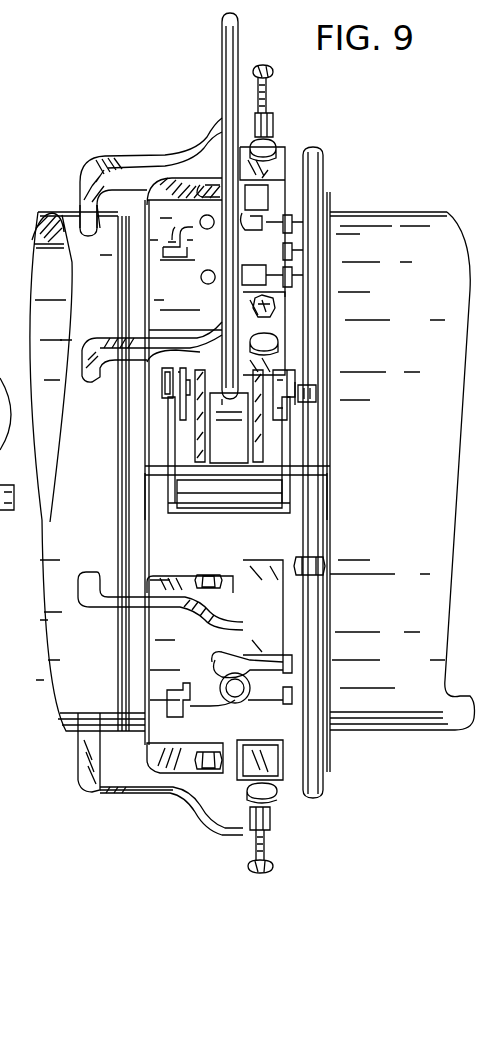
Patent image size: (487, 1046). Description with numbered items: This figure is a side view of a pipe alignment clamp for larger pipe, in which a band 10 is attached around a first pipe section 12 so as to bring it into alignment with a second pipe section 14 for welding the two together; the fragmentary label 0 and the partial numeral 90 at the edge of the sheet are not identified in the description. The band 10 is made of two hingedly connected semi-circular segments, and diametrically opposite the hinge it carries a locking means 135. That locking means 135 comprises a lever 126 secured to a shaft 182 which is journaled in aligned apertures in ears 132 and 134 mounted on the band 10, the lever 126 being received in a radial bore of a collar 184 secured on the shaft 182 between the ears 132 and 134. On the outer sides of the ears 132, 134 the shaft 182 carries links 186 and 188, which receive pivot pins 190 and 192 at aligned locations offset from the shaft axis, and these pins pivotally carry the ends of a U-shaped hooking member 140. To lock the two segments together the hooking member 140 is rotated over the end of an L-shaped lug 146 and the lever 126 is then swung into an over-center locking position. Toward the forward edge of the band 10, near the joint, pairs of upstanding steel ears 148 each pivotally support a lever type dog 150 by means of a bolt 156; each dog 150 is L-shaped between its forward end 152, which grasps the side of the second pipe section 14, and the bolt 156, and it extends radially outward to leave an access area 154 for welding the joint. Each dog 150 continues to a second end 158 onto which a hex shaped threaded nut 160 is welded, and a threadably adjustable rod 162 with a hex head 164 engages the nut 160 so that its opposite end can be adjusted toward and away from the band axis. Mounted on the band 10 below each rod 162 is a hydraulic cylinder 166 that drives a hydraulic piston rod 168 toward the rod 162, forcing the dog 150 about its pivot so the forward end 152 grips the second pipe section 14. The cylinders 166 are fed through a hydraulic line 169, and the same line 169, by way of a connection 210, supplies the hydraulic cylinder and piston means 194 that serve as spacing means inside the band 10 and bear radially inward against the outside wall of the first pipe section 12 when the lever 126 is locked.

The actuating element 0 is at (141, 620).
The band 10 is at (62, 8).
The first pipe section 12 is at (421, 212).
The second pipe section 14 is at (68, 214).
The coupling body 90 is at (8, 408).
The lever 126 is at (243, 50).
The ear 132 is at (200, 452).
The ear 134 is at (265, 439).
The locking means 135 is at (302, 423).
The U-shaped hooking member 140 is at (176, 517).
The lug 146 is at (218, 506).
The upstanding steel ears 148 is at (98, 160).
The lever type dog 150 is at (140, 158).
The forward end 152 is at (87, 220).
The access area 154 is at (110, 791).
The bolt 156 is at (192, 170).
The second end 158 is at (277, 828).
The hex shaped threaded nut 160 is at (275, 123).
The threadably adjustable rod 162 is at (268, 93).
The hex head 164 is at (270, 72).
The hydraulic cylinder 166 is at (276, 193).
The hydraulic piston rod 168 is at (280, 152).
The hydraulic line 169 is at (320, 150).
The shaft 182 is at (197, 433).
The collar 184 is at (230, 416).
The link 186 is at (181, 410).
The link 188 is at (286, 413).
The pivot pin 190 is at (162, 378).
The pivot pin 192 is at (322, 396).
The hydraulic cylinder and piston means 194 is at (182, 300).
The connection 210 is at (218, 228).